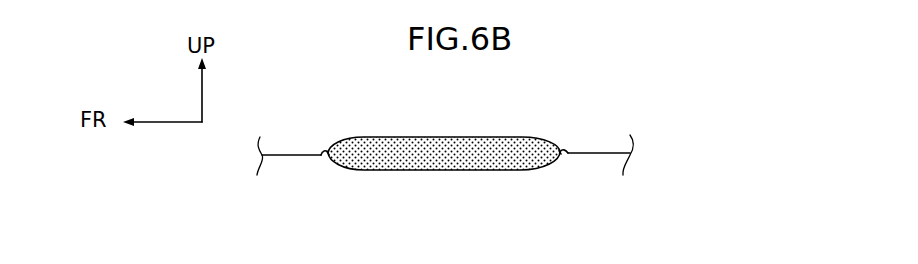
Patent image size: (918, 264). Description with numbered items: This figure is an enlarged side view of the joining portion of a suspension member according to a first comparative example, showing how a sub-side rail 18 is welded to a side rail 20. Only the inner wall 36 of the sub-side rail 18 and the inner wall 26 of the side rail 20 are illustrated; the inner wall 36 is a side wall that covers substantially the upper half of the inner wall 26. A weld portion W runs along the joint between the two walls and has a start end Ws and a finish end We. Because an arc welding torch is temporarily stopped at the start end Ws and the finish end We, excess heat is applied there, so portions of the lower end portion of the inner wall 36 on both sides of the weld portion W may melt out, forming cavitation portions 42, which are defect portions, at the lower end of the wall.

The weld portion W is at (418, 160).
The start end Ws is at (327, 160).
The finish end We is at (558, 157).
The cavitation portions 42 is at (322, 160).
The inner wall 36 is at (647, 158).
The sub-side rail 18 is at (647, 158).
The inner wall 26 is at (598, 167).
The side rail 20 is at (647, 189).